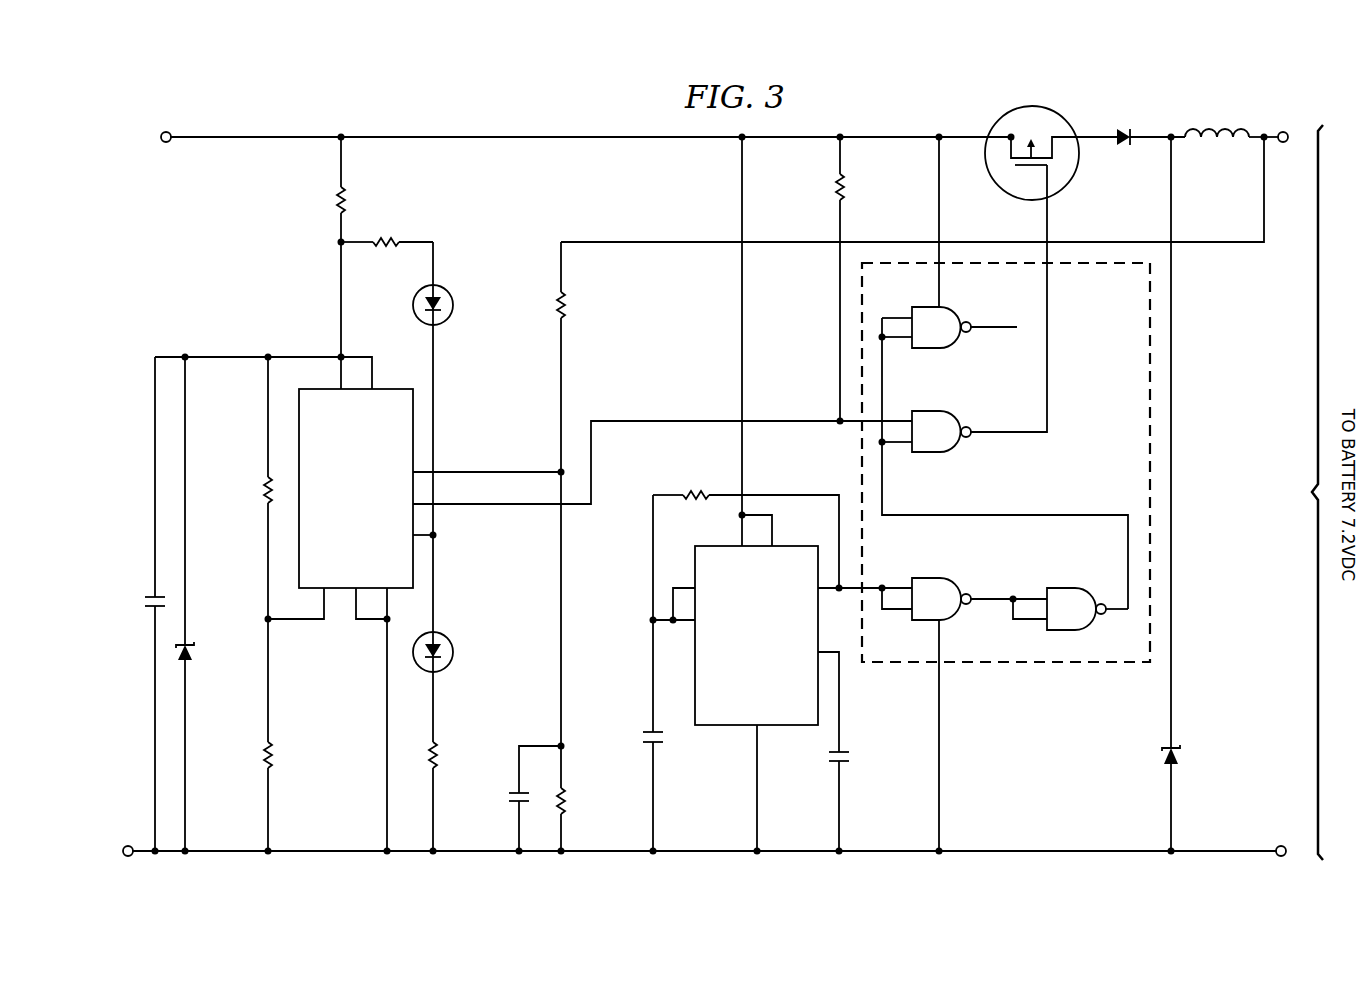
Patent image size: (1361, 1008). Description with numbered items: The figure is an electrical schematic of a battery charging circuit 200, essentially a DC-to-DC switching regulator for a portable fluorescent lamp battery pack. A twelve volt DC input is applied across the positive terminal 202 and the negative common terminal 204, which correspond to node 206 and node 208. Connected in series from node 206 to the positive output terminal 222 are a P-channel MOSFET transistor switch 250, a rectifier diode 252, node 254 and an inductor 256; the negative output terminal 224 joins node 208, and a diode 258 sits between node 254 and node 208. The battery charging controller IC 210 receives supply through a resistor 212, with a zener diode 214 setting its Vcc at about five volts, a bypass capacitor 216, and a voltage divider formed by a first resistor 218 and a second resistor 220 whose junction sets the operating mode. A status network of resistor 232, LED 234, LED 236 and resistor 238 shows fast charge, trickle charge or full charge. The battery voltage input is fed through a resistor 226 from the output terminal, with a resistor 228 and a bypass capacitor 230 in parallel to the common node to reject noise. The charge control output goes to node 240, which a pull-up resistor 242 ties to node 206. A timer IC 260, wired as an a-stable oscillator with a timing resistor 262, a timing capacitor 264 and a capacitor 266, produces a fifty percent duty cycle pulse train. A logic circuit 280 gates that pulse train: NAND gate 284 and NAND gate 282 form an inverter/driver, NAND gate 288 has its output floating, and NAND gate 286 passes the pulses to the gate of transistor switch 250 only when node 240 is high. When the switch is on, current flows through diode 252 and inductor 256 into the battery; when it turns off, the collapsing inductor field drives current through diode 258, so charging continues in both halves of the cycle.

The battery charging circuit 200 is at (410, 105).
The positive terminal 202 is at (166, 131).
The negative (common) terminal 204 is at (128, 862).
The node 206 is at (345, 142).
The node 208 is at (383, 848).
The battery charging controller IC 210 is at (386, 387).
The resistor 212 is at (336, 200).
The zener diode 214 is at (192, 652).
The bypass capacitor 216 is at (151, 607).
The first resistor 218 is at (264, 488).
The second resistor 220 is at (264, 757).
The positive output terminal 222 is at (1287, 131).
The negative (common) output terminal 224 is at (1285, 858).
The resistor 226 is at (565, 305).
The resistor 228 is at (565, 808).
The bypass capacitor 230 is at (506, 798).
The resistor 232 is at (388, 238).
The LED 234 is at (453, 305).
The LED 236 is at (453, 652).
The resistor 238 is at (437, 758).
The node 240 is at (837, 418).
The pull-up resistor 242 is at (836, 190).
The transistor switch 250 is at (1076, 170).
The rectifier diode 252 is at (1128, 130).
The node 254 is at (1174, 144).
The inductor 256 is at (1222, 128).
The diode 258 is at (1180, 756).
The timer IC 260 is at (732, 727).
The timing resistor 262 is at (694, 490).
The timing capacitor 264 is at (641, 737).
The capacitor 266 is at (853, 765).
The logic circuit 280 is at (1060, 672).
The NAND gate 282 is at (1073, 586).
The NAND gate 284 is at (940, 576).
The NAND gate 286 is at (940, 454).
The NAND gate 288 is at (940, 350).